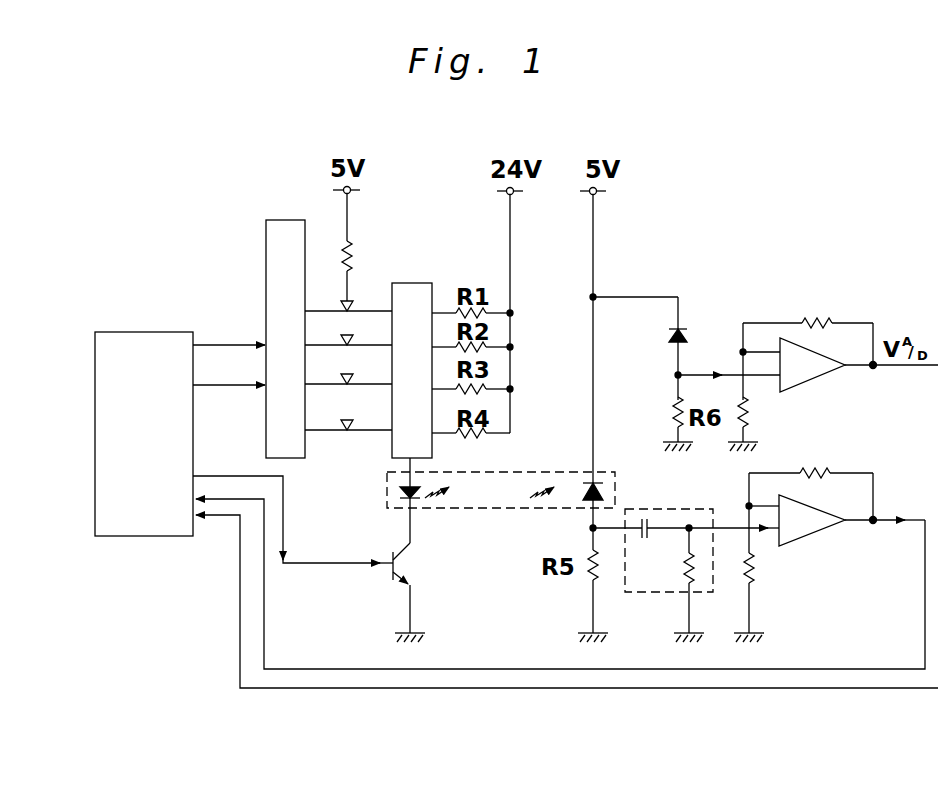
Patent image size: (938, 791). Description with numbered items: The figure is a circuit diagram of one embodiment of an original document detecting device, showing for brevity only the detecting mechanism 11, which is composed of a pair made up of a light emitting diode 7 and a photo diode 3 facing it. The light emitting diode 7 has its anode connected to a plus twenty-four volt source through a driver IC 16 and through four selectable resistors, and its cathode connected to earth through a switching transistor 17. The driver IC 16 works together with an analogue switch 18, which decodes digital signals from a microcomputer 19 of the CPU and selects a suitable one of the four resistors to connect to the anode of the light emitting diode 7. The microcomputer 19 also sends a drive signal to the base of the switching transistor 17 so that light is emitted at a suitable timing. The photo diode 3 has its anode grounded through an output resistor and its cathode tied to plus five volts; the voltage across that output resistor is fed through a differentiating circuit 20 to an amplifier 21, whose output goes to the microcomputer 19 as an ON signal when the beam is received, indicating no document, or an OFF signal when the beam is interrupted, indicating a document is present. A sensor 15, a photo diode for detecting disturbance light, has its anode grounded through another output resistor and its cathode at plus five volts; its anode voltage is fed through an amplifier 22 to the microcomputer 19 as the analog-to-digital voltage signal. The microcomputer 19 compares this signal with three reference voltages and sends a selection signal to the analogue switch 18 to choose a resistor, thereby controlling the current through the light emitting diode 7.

The photo diode 3 is at (605, 481).
The light emitting diode 7 is at (398, 488).
The detecting mechanism 11 is at (481, 469).
The sensor 15 is at (692, 334).
The driver integrated circuit 16 is at (412, 285).
The switching transistor 17 is at (408, 562).
The analogue switch 18 is at (283, 220).
The microcomputer 19 is at (148, 333).
The differentiating circuit 20 is at (665, 509).
The amplifier 21 is at (805, 528).
The amplifier 22 is at (805, 372).